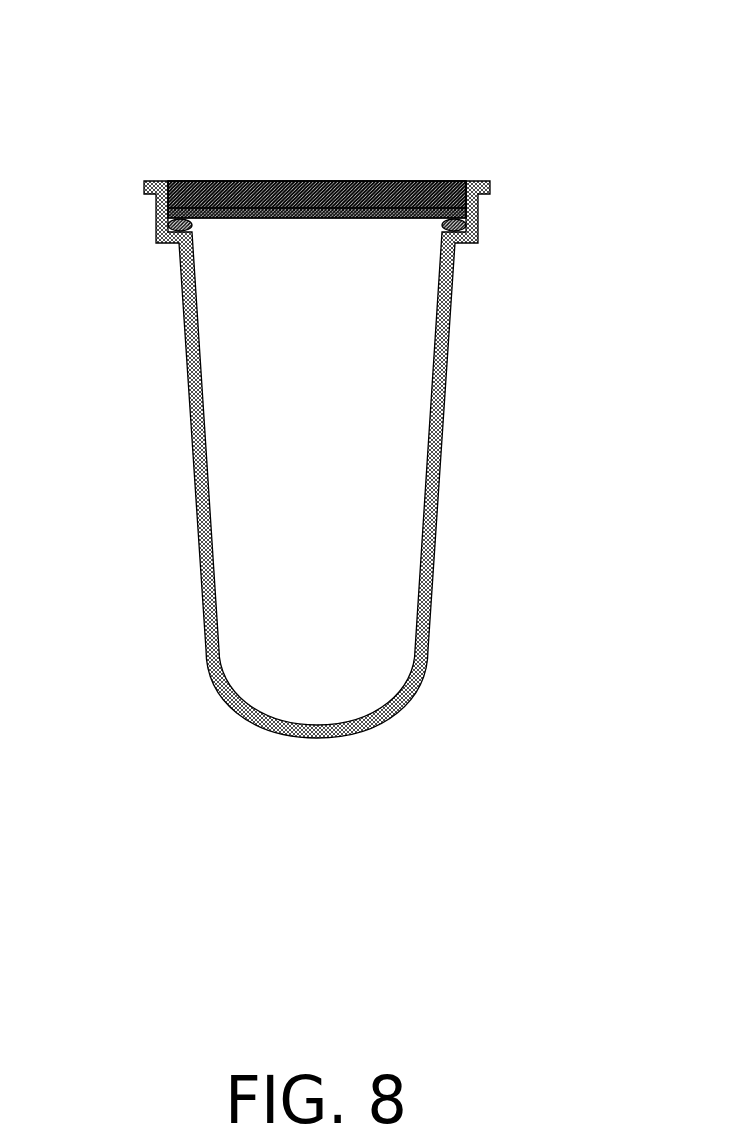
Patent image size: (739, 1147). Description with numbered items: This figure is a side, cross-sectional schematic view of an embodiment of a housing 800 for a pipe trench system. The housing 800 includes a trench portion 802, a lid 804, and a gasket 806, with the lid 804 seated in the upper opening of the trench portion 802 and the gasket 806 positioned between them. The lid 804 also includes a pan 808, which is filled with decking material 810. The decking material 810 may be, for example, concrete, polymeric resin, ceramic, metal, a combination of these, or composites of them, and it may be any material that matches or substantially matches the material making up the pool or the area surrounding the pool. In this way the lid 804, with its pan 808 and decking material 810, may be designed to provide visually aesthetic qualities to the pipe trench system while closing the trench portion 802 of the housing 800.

The housing 800 is at (120, 64).
The trench portion 802 is at (186, 350).
The lid 804 is at (315, 218).
The gasket 806 is at (470, 245).
The pan 808 is at (364, 265).
The decking material 810 is at (318, 181).